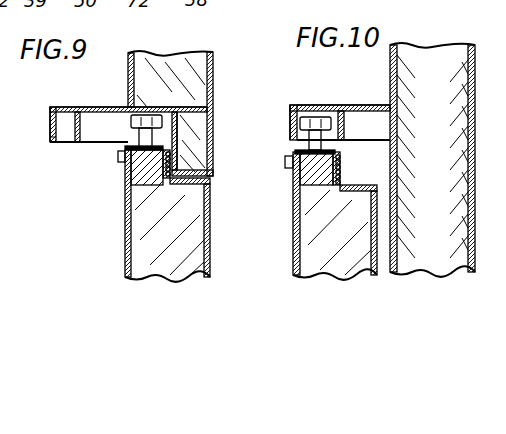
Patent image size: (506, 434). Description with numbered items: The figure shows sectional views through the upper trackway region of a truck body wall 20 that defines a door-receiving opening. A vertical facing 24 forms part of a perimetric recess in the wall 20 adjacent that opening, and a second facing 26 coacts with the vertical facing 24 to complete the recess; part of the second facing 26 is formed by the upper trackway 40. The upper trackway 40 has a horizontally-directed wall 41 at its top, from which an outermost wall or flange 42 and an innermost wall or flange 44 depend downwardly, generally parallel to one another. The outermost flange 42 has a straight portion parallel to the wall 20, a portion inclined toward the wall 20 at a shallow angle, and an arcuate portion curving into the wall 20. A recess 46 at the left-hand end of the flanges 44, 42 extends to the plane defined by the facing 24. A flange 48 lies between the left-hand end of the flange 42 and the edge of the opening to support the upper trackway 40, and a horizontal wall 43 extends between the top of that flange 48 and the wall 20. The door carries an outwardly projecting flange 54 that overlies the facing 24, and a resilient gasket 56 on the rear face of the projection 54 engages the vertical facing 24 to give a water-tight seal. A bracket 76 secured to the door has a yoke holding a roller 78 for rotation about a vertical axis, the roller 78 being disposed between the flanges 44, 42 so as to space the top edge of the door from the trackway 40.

In FIG. 9, the wall 20 is at (193, 109).
In FIG. 10, the wall 20 is at (413, 160).
In FIG. 9, the vertical facing 24 is at (211, 140).
In FIG. 9, the second facing 26 is at (159, 107).
In FIG. 9, the upper trackway 40 is at (128, 112).
In FIG. 10, the upper trackway 40 is at (340, 102).
In FIG. 9, the horizontally-directed wall 41 is at (131, 91).
In FIG. 10, the horizontally-directed wall 41 is at (342, 82).
In FIG. 9, the outermost wall or flange 42 is at (89, 147).
In FIG. 9, the horizontal wall 43 is at (44, 108).
In FIG. 10, the innermost wall or flange 44 is at (360, 125).
In FIG. 9, the recess 46 is at (122, 173).
In FIG. 9, the flange 48 is at (33, 150).
In FIG. 10, the flange 48 is at (294, 142).
In FIG. 9, the outwardly projecting flange 54 is at (123, 188).
In FIG. 10, the outwardly projecting flange 54 is at (278, 213).
In FIG. 9, the resilient gasket 56 is at (146, 216).
In FIG. 10, the resilient gasket 56 is at (335, 216).
In FIG. 10, the bracket 76 is at (303, 174).
In FIG. 10, the roller 78 is at (278, 106).